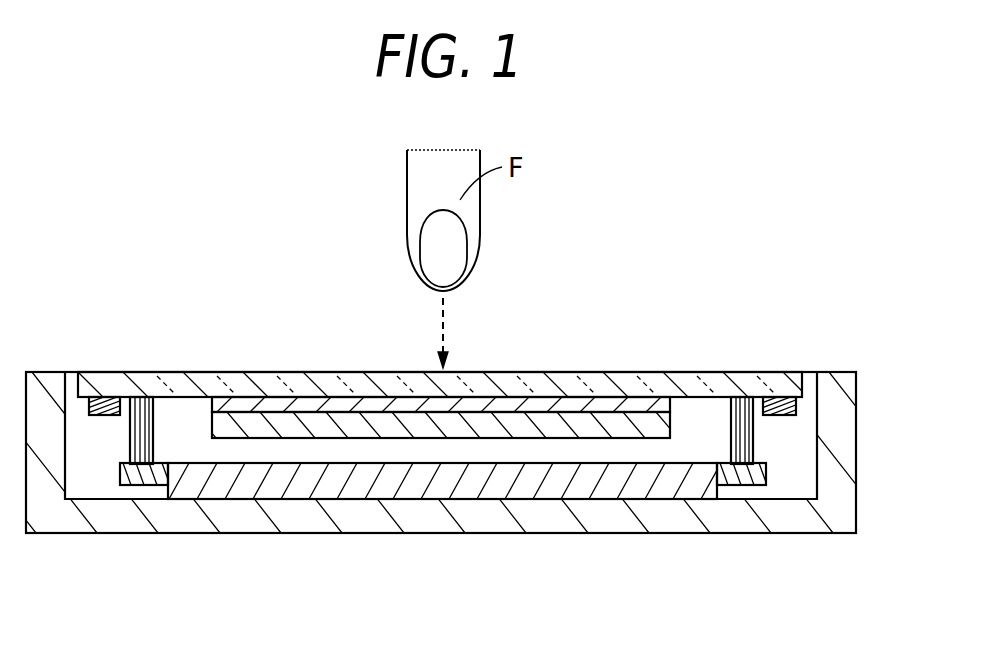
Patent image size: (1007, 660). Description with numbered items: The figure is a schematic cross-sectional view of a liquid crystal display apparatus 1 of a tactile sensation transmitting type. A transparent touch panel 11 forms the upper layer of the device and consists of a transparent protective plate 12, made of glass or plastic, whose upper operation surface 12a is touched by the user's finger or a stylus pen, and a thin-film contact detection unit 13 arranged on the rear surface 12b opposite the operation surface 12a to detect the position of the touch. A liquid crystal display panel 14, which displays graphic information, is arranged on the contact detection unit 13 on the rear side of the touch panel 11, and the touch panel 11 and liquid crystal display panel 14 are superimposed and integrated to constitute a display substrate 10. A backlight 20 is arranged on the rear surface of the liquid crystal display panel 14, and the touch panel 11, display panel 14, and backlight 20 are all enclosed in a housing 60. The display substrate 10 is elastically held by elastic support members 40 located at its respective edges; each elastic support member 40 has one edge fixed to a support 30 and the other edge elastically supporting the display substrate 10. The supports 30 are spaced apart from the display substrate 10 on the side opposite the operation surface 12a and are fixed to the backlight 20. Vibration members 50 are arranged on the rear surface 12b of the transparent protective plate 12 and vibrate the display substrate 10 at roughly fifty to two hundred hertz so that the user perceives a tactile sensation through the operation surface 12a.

The liquid crystal display apparatus 1 is at (770, 220).
The display substrate 10 is at (655, 373).
The touch panel 11 is at (300, 245).
The transparent protective plate 12 is at (333, 376).
The operation surface 12a is at (172, 372).
The rear surface 12b is at (193, 398).
The contact detection unit 13 is at (275, 403).
The liquid crystal display panel 14 is at (242, 422).
The backlight 20 is at (688, 488).
The support 30 is at (745, 483).
The elastic support member 40 is at (742, 397).
The vibration member 50 is at (773, 402).
The housing 60 is at (828, 373).